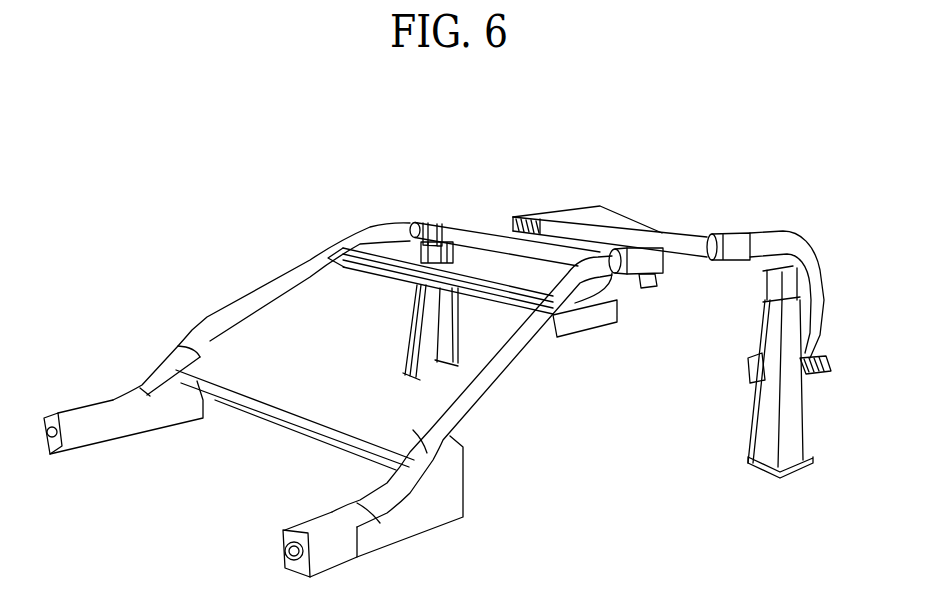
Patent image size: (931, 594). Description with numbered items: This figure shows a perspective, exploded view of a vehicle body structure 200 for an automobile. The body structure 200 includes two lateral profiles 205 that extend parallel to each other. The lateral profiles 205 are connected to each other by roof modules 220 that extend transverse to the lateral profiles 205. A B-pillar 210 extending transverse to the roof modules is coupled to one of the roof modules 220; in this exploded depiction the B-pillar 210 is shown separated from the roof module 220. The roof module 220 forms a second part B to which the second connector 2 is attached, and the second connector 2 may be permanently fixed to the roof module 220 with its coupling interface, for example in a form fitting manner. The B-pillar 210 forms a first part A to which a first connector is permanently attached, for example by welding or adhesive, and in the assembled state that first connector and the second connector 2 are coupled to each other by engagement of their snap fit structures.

The second connector 2 is at (647, 302).
The vehicle body structure 200 is at (165, 283).
The lateral profiles 205 is at (256, 296).
The B-pillar 210 is at (790, 430).
The roof module 220 is at (645, 248).